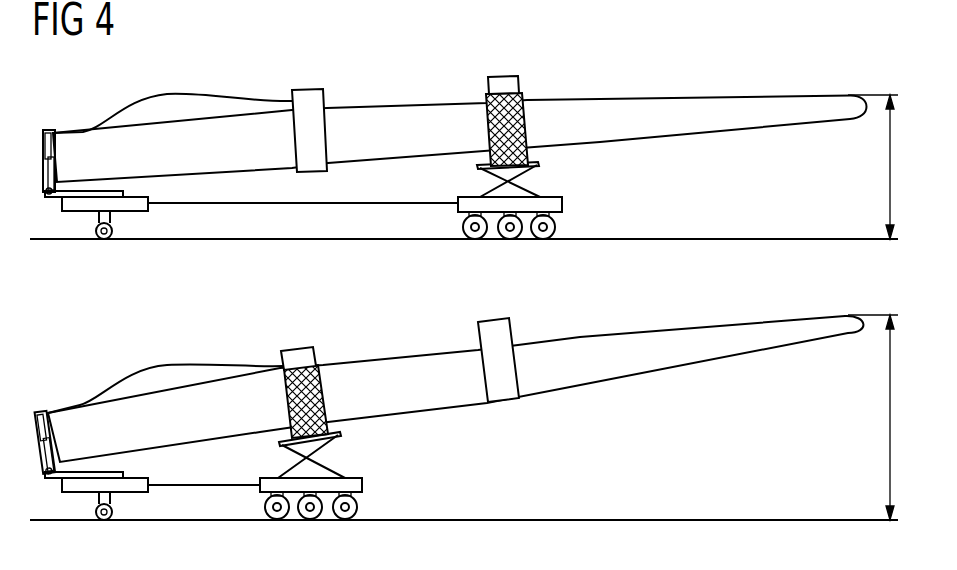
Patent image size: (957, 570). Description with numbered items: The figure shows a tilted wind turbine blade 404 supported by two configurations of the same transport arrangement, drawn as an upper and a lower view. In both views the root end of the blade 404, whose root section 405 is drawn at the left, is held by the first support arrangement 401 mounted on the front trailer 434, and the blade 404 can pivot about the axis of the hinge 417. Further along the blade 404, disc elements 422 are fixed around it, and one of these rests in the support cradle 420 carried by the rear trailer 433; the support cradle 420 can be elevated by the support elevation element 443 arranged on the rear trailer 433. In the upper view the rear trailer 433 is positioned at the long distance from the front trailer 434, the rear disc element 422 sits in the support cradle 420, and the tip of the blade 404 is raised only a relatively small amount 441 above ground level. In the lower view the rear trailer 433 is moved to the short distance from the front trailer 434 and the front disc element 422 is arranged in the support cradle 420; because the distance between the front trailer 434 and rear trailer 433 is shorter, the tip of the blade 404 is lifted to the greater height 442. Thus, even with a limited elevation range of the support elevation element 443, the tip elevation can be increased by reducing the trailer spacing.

The first support arrangement 401 is at (44, 210).
The blade 404 is at (408, 103).
The blade root section 405 is at (68, 132).
The hinge 417 is at (60, 460).
The support cradle 420 is at (527, 121).
The disc element 422 is at (305, 99).
The rear trailer 433 is at (562, 204).
The front trailer 434 is at (138, 205).
The relatively small elevation amount 441 is at (872, 167).
The increased tip height 442 is at (872, 417).
The support elevation element 443 is at (533, 180).